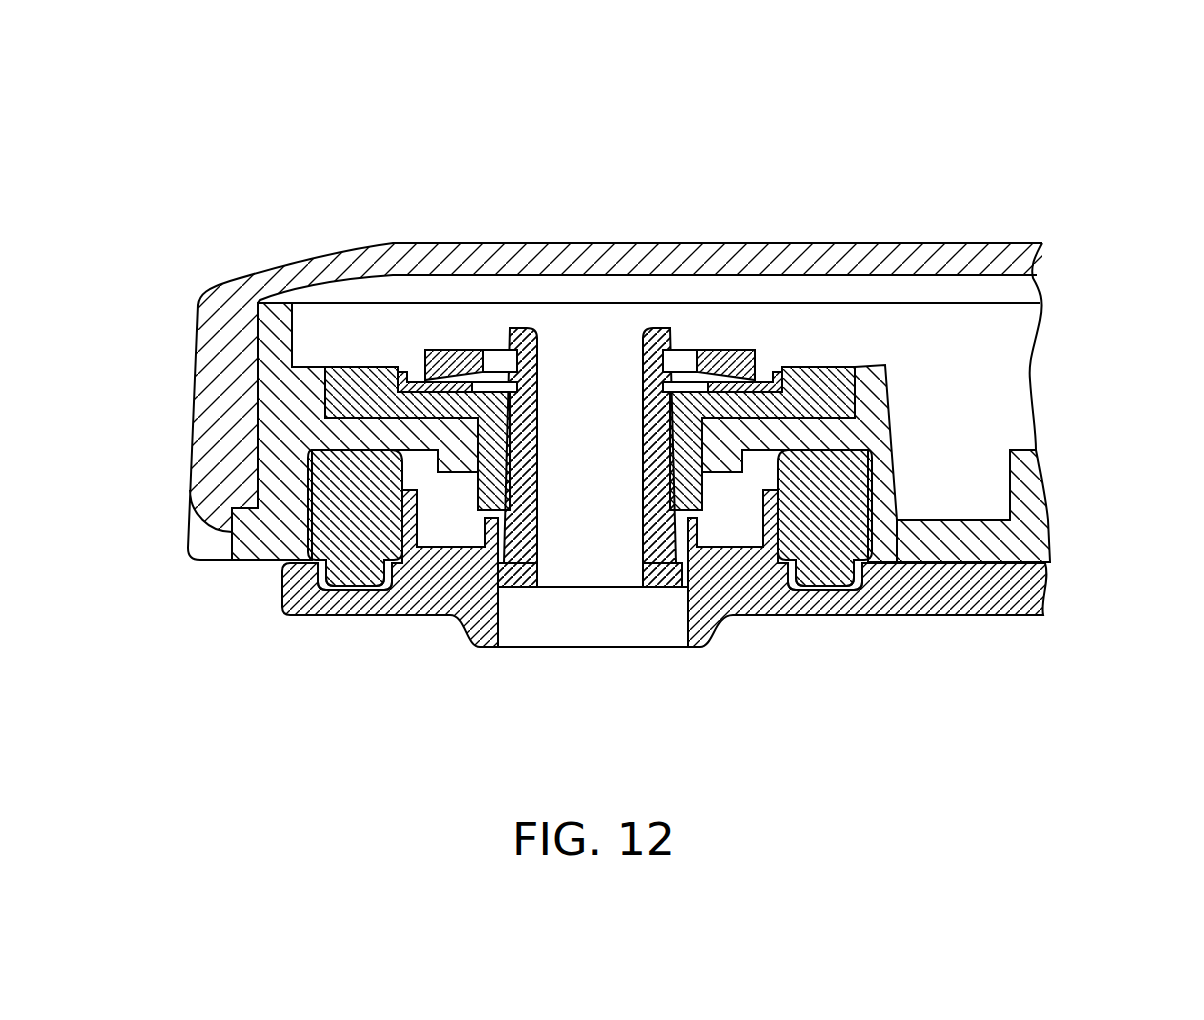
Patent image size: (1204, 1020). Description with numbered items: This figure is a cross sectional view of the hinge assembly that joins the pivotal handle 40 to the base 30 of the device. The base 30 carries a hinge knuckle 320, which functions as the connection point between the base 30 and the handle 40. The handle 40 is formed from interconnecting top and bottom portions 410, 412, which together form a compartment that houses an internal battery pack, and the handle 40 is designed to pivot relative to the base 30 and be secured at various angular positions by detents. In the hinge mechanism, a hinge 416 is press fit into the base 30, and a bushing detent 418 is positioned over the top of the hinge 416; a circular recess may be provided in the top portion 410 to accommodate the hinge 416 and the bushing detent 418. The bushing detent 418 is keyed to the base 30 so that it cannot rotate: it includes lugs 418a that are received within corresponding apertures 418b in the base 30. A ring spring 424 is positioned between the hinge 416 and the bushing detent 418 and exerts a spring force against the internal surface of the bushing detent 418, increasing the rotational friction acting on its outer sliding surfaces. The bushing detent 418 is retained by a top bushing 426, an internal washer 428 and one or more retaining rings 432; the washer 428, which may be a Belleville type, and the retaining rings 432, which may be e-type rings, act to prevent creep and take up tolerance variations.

The base 30 is at (962, 590).
The handle 40 is at (292, 203).
The hinge knuckle 320 is at (708, 607).
The top portion 410 is at (1013, 540).
The bottom portion 412 is at (1003, 248).
The hinge 416 is at (520, 577).
The bushing detent 418 is at (320, 523).
The lugs 418a is at (340, 573).
The apertures 418b is at (367, 593).
The ring spring 424 is at (416, 540).
The top bushing 426 is at (845, 386).
The internal washer 428 is at (764, 380).
The retaining rings 432 is at (443, 362).